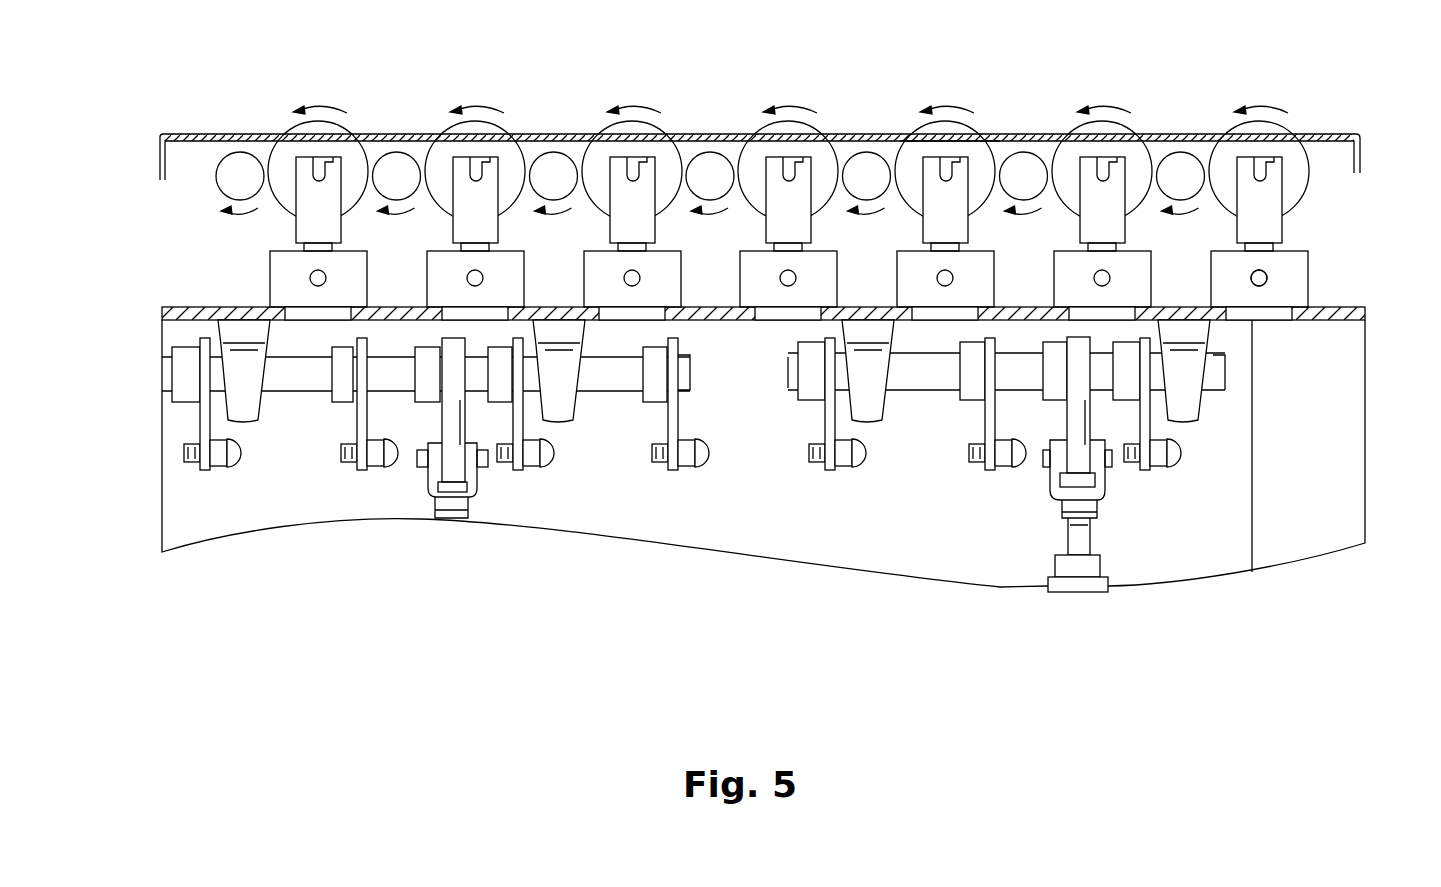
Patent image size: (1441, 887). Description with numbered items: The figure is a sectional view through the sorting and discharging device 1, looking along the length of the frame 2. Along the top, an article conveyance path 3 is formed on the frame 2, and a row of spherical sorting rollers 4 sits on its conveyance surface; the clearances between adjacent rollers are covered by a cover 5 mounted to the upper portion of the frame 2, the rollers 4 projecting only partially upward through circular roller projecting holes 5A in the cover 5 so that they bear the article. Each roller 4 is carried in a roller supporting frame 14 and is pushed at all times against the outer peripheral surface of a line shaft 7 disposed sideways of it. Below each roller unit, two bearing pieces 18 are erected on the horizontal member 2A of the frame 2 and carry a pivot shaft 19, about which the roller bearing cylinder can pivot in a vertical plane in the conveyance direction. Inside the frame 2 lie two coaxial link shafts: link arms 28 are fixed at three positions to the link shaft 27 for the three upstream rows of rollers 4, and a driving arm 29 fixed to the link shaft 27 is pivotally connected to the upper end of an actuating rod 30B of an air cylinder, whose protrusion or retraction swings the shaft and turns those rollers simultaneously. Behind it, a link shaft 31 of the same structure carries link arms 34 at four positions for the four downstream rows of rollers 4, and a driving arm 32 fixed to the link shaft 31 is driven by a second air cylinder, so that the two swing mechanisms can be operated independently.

The sorting and discharging device 1 is at (828, 170).
The frame 2 is at (1352, 427).
The horizontal member 2A is at (1312, 320).
The article conveyance path 3 is at (1120, 83).
The spherical sorting roller 4 is at (922, 130).
The cover 5 is at (1325, 133).
The roller projecting hole 5A is at (975, 133).
The line shaft 7 is at (1182, 153).
The roller supporting frame 14 is at (1107, 222).
The bearing piece 18 is at (1300, 260).
The pivot shaft 19 is at (1267, 273).
The link shaft 27 is at (923, 380).
The link arm 28 is at (825, 418).
The driving arm 29 is at (1070, 417).
The actuating rod 30B is at (1085, 540).
The link shaft 31 is at (307, 377).
The driving arm 32 is at (457, 420).
The link arm 34 is at (200, 422).